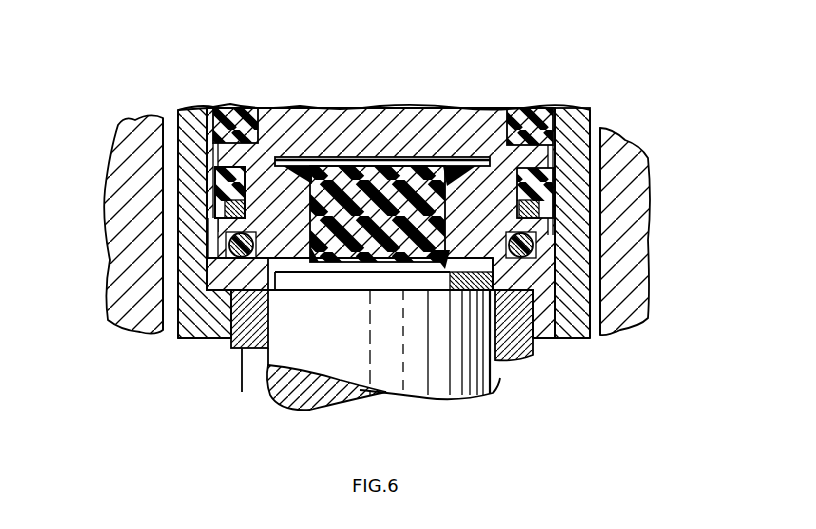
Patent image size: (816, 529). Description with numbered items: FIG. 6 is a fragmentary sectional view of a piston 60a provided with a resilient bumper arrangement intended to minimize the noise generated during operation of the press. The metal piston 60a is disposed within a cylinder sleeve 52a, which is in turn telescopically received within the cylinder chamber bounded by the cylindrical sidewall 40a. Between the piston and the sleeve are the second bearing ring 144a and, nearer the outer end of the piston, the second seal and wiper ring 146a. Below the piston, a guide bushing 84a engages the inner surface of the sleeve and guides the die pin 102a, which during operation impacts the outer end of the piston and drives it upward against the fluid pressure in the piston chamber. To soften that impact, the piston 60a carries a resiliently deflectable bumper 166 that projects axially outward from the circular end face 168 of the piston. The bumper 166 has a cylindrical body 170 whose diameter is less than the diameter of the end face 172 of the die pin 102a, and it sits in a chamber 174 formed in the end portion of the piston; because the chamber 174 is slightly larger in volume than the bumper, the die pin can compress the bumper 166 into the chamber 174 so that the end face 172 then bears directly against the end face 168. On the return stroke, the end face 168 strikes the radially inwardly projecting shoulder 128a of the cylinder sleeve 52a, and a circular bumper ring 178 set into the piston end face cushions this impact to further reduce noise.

The cylindrical sidewall of cylinder chamber 40a is at (608, 156).
The cylinder sleeve 52a is at (568, 116).
The piston 60a is at (383, 100).
The guide bushing 84a is at (242, 350).
The die pin 102a is at (478, 377).
The shoulder 128a is at (276, 273).
The second bearing ring 144a is at (292, 62).
The second seal and wiper ring 146a is at (215, 192).
The resiliently deflectable bumper 166 is at (490, 278).
The circular end face of piston 168 is at (496, 286).
The cylindrical body of bumper 170 is at (350, 240).
The end face of die pin 172 is at (432, 268).
The chamber 174 is at (430, 157).
The circular bumper ring 178 is at (234, 262).